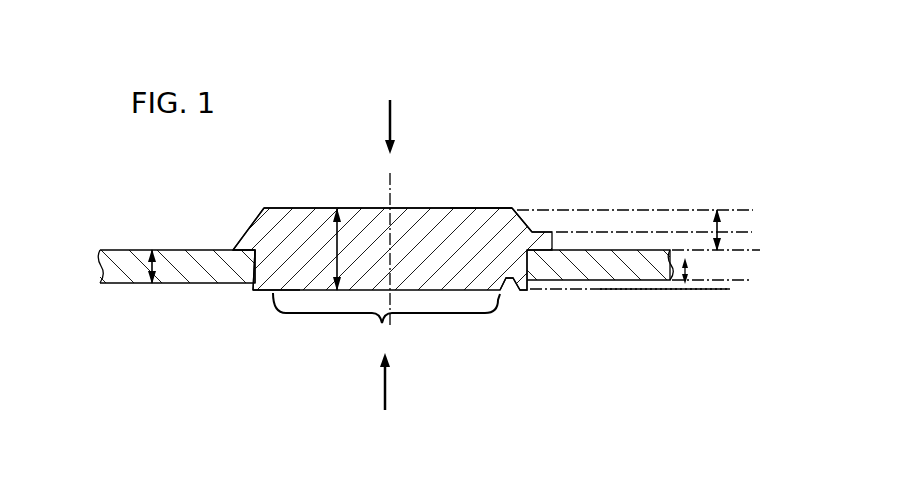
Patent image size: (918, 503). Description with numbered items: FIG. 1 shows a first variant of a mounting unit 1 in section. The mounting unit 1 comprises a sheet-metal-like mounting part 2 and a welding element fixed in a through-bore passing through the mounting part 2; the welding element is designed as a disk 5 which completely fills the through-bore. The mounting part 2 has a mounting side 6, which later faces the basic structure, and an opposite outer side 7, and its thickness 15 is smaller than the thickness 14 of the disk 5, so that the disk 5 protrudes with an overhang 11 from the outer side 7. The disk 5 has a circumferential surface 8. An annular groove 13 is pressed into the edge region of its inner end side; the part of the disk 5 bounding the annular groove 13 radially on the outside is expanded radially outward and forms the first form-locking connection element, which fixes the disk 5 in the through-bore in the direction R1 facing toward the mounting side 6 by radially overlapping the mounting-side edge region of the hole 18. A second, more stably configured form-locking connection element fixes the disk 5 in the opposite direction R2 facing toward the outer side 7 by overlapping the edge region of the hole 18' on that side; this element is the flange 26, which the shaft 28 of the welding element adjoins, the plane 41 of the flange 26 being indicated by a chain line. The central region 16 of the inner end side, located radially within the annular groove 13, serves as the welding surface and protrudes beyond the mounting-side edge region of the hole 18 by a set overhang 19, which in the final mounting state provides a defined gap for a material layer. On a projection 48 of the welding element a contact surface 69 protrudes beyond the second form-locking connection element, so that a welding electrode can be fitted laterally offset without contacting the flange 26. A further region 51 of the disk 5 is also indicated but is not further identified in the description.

The mounting unit 1 is at (140, 375).
The mounting part 2 is at (635, 288).
The disk 5 is at (401, 182).
The mounting side 6 is at (130, 284).
The outer side 7 is at (600, 242).
The circumferential surface 8 is at (528, 255).
The overhang 11 is at (716, 228).
The annular groove 13 is at (270, 287).
The thickness 14 is at (340, 260).
The thickness 15 is at (165, 284).
The central region 16 is at (382, 333).
The edge region of the hole 18 is at (194, 353).
The joint 18' is at (268, 180).
The set overhang 19 is at (686, 294).
The flange 26 is at (228, 242).
The shaft 28 is at (289, 254).
The plane 41 is at (632, 232).
The projection 48 is at (488, 216).
The web 51 is at (458, 242).
The contact surface 69 is at (412, 207).
The direction R1 is at (387, 381).
The direction R2 is at (392, 105).